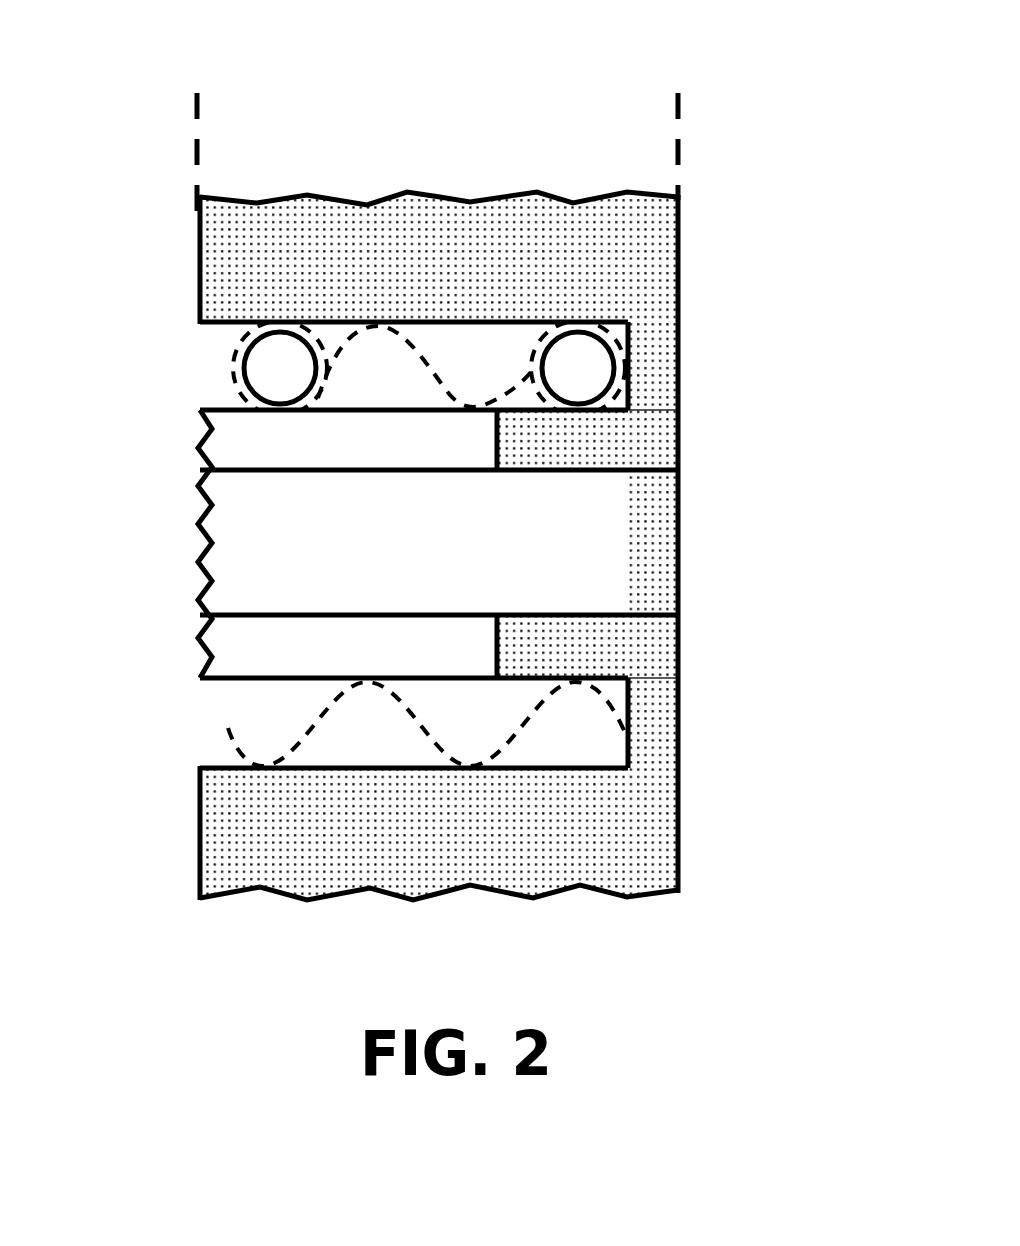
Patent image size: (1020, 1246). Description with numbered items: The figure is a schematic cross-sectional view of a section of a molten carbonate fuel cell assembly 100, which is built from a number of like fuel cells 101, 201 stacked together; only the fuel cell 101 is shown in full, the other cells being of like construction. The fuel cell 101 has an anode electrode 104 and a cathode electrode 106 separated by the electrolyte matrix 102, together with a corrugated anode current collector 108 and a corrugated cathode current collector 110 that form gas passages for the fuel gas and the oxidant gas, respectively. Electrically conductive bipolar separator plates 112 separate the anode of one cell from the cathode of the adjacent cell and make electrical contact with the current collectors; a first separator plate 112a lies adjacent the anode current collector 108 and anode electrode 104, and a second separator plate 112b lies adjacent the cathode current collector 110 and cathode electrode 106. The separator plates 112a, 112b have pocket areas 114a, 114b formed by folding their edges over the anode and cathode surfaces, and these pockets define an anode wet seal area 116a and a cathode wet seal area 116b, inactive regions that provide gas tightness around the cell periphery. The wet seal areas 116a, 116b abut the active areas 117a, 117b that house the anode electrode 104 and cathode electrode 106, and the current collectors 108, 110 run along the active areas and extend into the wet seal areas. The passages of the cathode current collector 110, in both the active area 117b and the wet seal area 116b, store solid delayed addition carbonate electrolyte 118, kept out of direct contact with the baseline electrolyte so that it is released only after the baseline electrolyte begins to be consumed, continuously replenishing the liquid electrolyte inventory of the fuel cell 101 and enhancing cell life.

The molten carbonate fuel cell assembly 100 is at (455, 100).
The fuel cell 201 is at (645, 125).
The fuel cell 101 is at (710, 314).
The electrolyte matrix 102 is at (643, 552).
The anode electrode 104 is at (205, 658).
The cathode electrode 106 is at (228, 420).
The anode current collector 108 is at (230, 730).
The cathode current collector 110 is at (222, 380).
The bipolar separator plate 112 is at (493, 565).
The first separator plate 112a is at (632, 848).
The second separator plate 112b is at (655, 275).
The pocket area 114a is at (637, 615).
The pocket area 114b is at (642, 486).
The anode wet seal area 116a is at (451, 753).
The cathode wet seal area 116b is at (449, 278).
The active area 117a is at (238, 613).
The active area 117b is at (238, 470).
The delayed addition carbonate electrolyte 118 is at (283, 342).